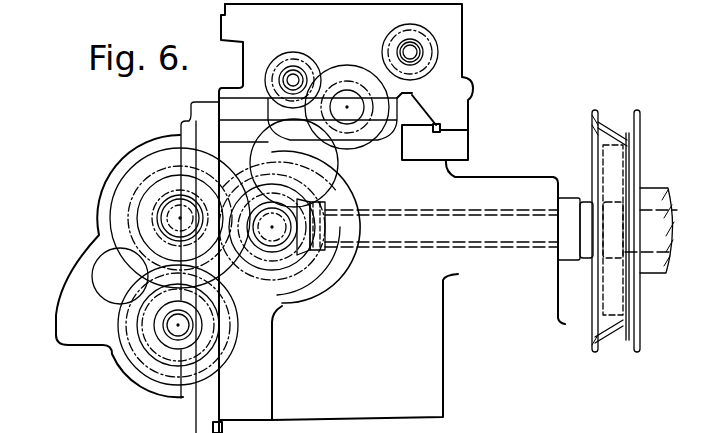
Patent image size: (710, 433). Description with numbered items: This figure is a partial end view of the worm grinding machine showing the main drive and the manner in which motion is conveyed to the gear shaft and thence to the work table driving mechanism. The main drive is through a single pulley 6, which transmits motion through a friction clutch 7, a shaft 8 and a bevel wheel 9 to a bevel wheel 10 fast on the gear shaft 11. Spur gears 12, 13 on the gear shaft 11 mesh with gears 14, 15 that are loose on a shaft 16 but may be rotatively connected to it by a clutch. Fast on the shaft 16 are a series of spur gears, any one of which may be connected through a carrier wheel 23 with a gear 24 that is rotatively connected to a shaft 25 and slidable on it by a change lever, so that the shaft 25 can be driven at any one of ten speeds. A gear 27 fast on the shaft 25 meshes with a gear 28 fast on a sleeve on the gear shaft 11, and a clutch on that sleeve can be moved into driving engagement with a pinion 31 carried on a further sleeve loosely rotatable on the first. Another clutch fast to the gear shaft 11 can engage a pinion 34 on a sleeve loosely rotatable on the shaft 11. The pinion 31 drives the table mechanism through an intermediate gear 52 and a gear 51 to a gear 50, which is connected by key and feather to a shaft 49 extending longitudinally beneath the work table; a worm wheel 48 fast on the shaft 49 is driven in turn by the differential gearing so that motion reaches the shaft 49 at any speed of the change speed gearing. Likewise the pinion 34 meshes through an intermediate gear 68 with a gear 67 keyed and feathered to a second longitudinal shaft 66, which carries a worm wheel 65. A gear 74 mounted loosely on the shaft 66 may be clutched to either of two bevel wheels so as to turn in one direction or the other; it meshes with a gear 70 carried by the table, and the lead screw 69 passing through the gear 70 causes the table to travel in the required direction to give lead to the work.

The pulley 6 is at (620, 128).
The friction clutch 7 is at (605, 133).
The shaft 8 is at (516, 217).
The bevel wheel 9 is at (336, 271).
The bevel wheel 10 is at (273, 268).
The gear shaft 11 is at (279, 240).
The spur gear 12 is at (265, 245).
The spur gear 13 is at (331, 282).
The gear 14 is at (150, 153).
The gear 15 is at (133, 213).
The shaft 16 is at (160, 210).
The carrier wheel 23 is at (95, 277).
The gear 24 is at (216, 347).
The shaft 25 is at (170, 337).
The gear 27 is at (132, 360).
The gear 28 is at (289, 311).
The pinion 31 is at (303, 213).
The pinion 34 is at (306, 229).
The worm wheel 48 is at (423, 50).
The shaft 49 is at (420, 45).
The gear 50 is at (439, 66).
The gear 51 is at (396, 97).
The intermediate gear 52 is at (338, 159).
The worm wheel 65 is at (311, 70).
The shaft 66 is at (288, 77).
The gear 67 is at (307, 56).
The intermediate gear 68 is at (338, 170).
The lead screw 69 is at (349, 92).
The gear 70 is at (338, 78).
The gear 74 is at (287, 51).